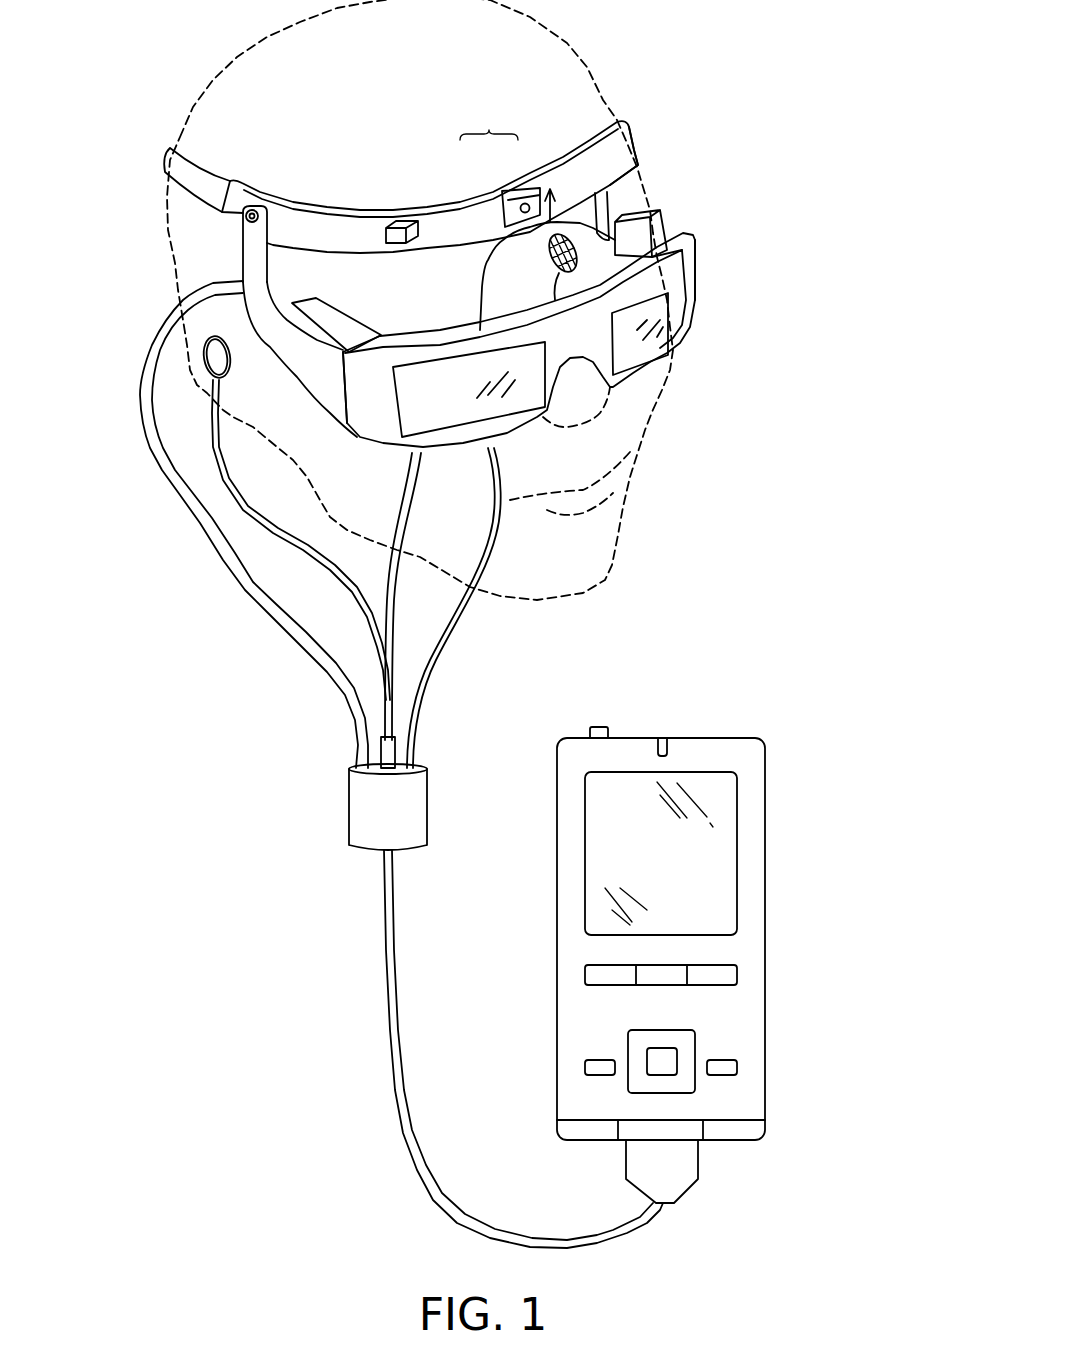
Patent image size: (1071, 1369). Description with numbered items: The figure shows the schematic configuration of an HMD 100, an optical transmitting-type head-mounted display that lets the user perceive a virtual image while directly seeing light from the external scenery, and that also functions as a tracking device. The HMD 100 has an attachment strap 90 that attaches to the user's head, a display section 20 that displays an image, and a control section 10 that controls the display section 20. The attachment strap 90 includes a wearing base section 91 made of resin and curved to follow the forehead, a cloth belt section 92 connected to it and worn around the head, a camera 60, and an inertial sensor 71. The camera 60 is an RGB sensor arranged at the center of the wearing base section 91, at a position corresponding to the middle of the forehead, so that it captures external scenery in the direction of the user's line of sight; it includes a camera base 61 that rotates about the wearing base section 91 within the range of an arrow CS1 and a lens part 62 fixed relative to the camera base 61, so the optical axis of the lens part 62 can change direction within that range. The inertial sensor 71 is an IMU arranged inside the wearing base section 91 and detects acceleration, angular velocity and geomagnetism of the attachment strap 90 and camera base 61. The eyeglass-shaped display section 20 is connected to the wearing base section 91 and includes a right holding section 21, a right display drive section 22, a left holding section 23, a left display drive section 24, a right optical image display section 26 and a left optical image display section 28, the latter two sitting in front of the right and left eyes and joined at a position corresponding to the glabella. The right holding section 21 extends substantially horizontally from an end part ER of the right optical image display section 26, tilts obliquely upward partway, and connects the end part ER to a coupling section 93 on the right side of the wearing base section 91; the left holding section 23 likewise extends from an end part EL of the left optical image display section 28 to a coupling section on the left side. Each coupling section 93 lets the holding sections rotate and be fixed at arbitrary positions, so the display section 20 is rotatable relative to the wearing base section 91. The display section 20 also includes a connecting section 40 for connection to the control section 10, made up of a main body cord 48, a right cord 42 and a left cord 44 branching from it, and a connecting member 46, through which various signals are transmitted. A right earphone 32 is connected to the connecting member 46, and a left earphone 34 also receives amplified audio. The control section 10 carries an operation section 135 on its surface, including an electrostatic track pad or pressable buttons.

The HMD 100 is at (780, 28).
The control section 10 is at (696, 930).
The operation section 135 is at (737, 952).
The display section 20 is at (710, 216).
The right holding section 21 is at (290, 386).
The right display drive section 22 is at (332, 318).
The left holding section 23 is at (677, 204).
The left display drive section 24 is at (640, 220).
The right optical image display section 26 is at (447, 420).
The left optical image display section 28 is at (677, 330).
The right earphone 32 is at (210, 357).
The left earphone 34 is at (552, 252).
The connecting section 40 is at (401, 764).
The right cord 42 is at (243, 583).
The left cord 44 is at (460, 620).
The connecting member 46 is at (413, 806).
The main body cord 48 is at (390, 1007).
The camera 60 is at (489, 122).
The camera base 61 is at (505, 203).
The lens part 62 is at (521, 204).
The inertial sensor 71 is at (397, 216).
The attachment strap 90 is at (637, 124).
The wearing base section 91 is at (597, 133).
The belt section 92 is at (183, 157).
The coupling section 93 is at (245, 218).
The arrow CS1 is at (568, 188).
The end part EL is at (697, 283).
The end part ER is at (372, 423).